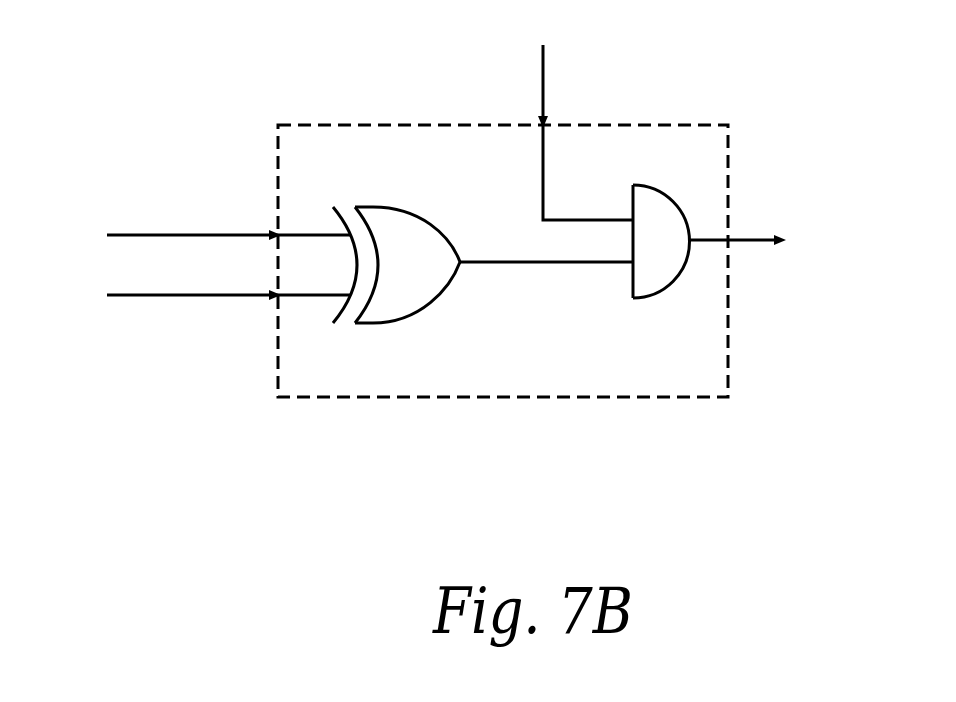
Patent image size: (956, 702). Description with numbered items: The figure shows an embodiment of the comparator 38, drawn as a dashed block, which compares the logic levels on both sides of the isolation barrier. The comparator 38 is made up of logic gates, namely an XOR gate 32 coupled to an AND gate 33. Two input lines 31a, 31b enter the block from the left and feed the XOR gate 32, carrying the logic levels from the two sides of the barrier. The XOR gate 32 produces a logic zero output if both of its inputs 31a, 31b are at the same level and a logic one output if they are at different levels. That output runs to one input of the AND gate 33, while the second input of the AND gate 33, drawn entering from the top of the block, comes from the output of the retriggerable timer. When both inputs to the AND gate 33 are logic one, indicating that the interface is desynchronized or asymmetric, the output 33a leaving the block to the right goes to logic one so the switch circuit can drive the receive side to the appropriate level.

The comparator 38 is at (468, 183).
The first input of the XOR gate 31a is at (197, 233).
The second input of the XOR gate 31b is at (197, 293).
The XOR gate 32 is at (412, 315).
The AND gate 33 is at (662, 295).
The output of the AND gate 33a is at (765, 242).